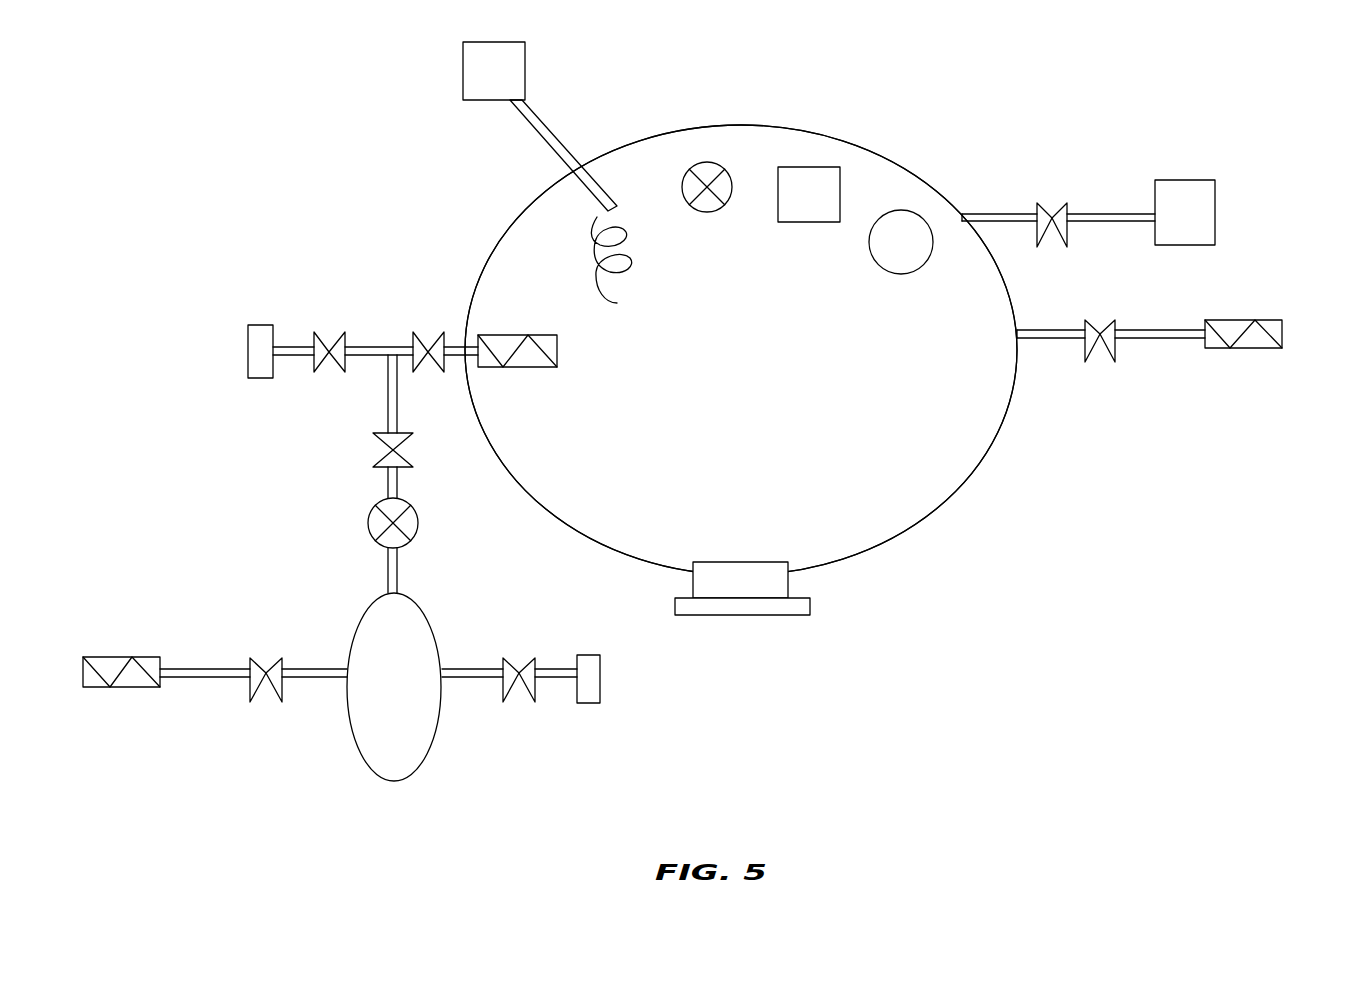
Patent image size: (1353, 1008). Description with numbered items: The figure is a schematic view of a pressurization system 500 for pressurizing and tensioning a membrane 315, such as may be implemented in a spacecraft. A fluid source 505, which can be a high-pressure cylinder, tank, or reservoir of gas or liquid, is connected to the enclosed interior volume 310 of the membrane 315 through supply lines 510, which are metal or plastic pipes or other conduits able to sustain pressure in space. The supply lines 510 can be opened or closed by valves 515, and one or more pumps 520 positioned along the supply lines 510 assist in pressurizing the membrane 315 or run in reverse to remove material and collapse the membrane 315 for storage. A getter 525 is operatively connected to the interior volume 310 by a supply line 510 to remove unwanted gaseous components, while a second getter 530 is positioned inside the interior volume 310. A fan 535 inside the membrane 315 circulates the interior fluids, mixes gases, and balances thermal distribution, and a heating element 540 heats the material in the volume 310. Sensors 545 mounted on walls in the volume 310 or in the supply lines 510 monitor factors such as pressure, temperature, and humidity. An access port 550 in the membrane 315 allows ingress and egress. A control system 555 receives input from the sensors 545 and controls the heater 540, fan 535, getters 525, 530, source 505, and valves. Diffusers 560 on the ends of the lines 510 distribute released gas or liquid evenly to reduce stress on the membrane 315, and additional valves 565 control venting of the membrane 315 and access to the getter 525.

The pressurization system 500 is at (276, 184).
The enclosed interior volume 310 is at (741, 442).
The membrane 315 is at (905, 537).
The fluid source 505 is at (437, 735).
The supply lines 510 is at (987, 214).
The valves 515 is at (428, 332).
The pumps 520 is at (372, 535).
The getter 525 is at (1188, 180).
The getter 530 is at (805, 167).
The fan 535 is at (690, 170).
The heating element 540 is at (597, 217).
The sensors 545 is at (908, 210).
The access port 550 is at (742, 615).
The control system 555 is at (463, 52).
The diffusers 560 is at (503, 335).
The additional valves 565 is at (1050, 207).